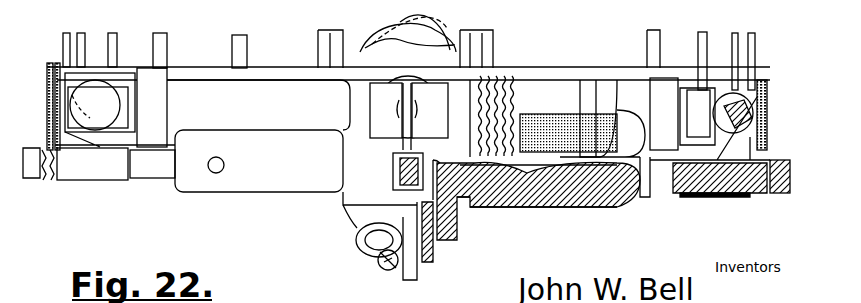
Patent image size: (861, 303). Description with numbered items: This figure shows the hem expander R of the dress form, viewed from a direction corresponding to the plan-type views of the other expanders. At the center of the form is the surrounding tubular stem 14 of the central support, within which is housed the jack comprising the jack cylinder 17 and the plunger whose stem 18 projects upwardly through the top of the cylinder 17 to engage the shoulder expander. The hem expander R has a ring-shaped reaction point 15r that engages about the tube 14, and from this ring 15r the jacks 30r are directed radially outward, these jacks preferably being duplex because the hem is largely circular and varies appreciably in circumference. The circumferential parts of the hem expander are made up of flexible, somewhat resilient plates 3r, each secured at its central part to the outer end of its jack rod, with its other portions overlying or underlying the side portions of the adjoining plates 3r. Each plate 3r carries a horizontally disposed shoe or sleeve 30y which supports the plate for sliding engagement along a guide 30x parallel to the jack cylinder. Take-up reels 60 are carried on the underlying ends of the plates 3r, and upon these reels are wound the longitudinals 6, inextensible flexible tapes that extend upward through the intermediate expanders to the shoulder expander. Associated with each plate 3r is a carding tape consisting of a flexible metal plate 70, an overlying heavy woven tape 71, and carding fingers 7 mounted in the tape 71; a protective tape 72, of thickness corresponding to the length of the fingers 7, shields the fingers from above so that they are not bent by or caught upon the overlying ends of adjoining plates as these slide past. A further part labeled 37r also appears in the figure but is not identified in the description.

The heavy woven tape 71 is at (52, 70).
The flexible metal plate 70 is at (58, 63).
The take-up reel 60 is at (97, 98).
The longitudinal 6 is at (722, 14).
The bracket 37r is at (333, 38).
The tubular stem 14 is at (363, 58).
The jack cylinder 17 is at (398, 20).
The plunger stem 18 is at (413, 50).
The protective tape 72 is at (48, 92).
The carding finger 7 is at (48, 125).
The jack 30r is at (628, 14).
The plate 3r is at (757, 97).
The reaction point 15r is at (503, 197).
The shoe 30y is at (393, 175).
The guide 30x is at (410, 200).
The hem expander R is at (192, 195).